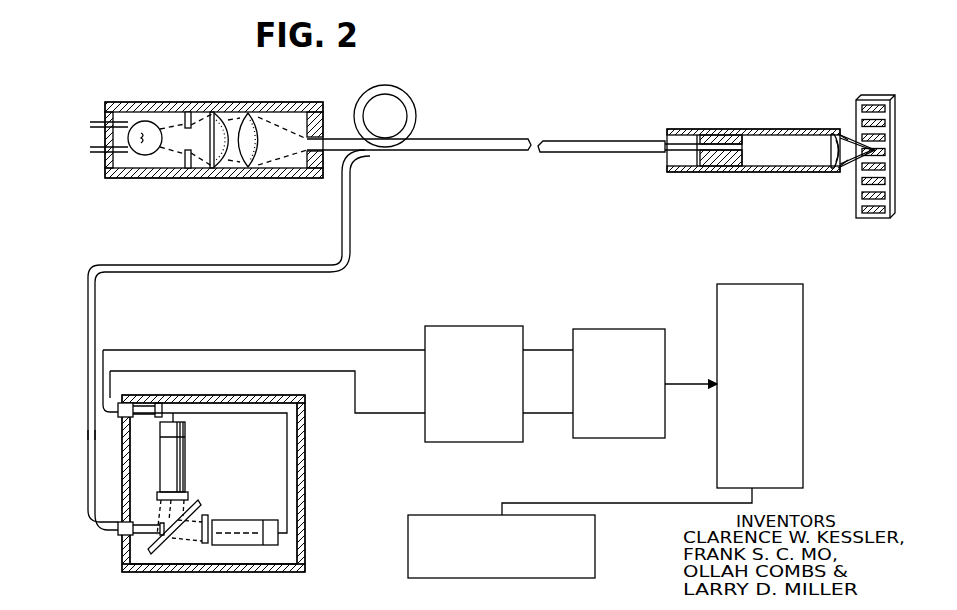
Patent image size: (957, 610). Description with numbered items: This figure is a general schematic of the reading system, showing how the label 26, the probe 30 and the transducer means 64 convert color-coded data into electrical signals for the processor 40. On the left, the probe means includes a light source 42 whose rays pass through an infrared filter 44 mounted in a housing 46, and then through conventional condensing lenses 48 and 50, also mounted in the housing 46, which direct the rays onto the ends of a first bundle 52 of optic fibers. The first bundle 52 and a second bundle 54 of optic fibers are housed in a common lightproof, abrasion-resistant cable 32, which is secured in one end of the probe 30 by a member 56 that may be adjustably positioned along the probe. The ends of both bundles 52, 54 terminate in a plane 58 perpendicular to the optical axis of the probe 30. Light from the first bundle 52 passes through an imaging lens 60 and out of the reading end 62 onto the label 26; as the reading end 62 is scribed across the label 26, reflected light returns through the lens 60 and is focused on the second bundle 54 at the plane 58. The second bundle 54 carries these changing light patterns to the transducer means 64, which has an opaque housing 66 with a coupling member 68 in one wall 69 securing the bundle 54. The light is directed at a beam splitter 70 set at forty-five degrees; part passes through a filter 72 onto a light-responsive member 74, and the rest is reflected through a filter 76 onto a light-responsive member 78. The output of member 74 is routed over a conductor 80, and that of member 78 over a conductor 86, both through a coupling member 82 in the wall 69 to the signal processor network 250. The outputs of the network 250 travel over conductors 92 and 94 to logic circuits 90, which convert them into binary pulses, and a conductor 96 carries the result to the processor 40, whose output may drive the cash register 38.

The label 26 is at (895, 128).
The probe 30 is at (750, 122).
The cable 32 is at (582, 141).
The cash register 38 is at (408, 553).
The processor 40 is at (803, 320).
The light source 42 is at (145, 155).
The infrared filter 44 is at (186, 112).
The housing 46 is at (213, 112).
The condensing lens 48 is at (221, 166).
The condensing lens 50 is at (256, 138).
The first bundle of optic fibers 52 is at (338, 139).
The second bundle of optic fibers 54 is at (350, 203).
The member 56 is at (712, 135).
The plane 58 is at (748, 156).
The imaging lens 60 is at (831, 152).
The reading end 62 is at (846, 134).
The transducer means 64 is at (310, 512).
The housing 66 is at (246, 572).
The coupling member 68 is at (116, 536).
The wall 69 is at (118, 441).
The beam splitter 70 is at (197, 504).
The filter 72 is at (201, 546).
The light-responsive member 74 is at (249, 525).
The filter 76 is at (155, 499).
The light-responsive member 78 is at (185, 426).
The conductor 80 is at (392, 413).
The coupling member 82 is at (118, 412).
The conductor 86 is at (155, 403).
The logic circuits 90 is at (621, 329).
The conductor 92 is at (548, 413).
The conductor 94 is at (544, 350).
The conductor 96 is at (696, 386).
The signal processor network 250 is at (478, 326).